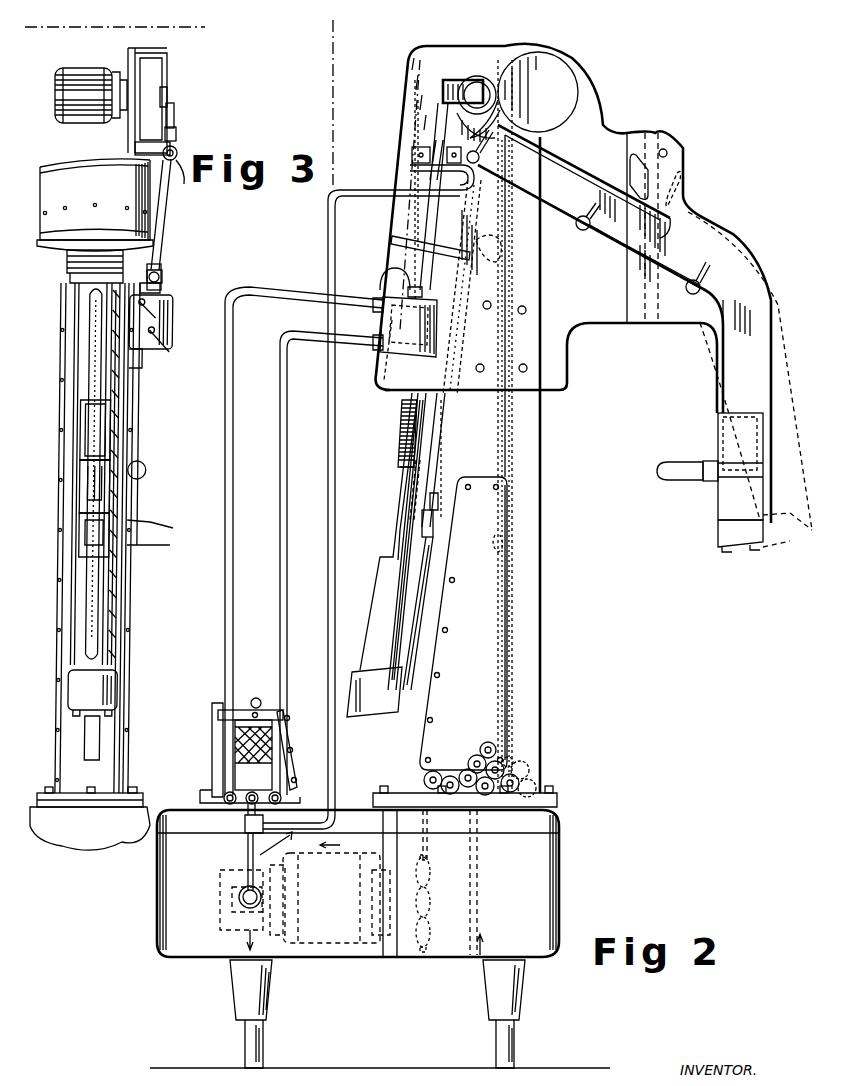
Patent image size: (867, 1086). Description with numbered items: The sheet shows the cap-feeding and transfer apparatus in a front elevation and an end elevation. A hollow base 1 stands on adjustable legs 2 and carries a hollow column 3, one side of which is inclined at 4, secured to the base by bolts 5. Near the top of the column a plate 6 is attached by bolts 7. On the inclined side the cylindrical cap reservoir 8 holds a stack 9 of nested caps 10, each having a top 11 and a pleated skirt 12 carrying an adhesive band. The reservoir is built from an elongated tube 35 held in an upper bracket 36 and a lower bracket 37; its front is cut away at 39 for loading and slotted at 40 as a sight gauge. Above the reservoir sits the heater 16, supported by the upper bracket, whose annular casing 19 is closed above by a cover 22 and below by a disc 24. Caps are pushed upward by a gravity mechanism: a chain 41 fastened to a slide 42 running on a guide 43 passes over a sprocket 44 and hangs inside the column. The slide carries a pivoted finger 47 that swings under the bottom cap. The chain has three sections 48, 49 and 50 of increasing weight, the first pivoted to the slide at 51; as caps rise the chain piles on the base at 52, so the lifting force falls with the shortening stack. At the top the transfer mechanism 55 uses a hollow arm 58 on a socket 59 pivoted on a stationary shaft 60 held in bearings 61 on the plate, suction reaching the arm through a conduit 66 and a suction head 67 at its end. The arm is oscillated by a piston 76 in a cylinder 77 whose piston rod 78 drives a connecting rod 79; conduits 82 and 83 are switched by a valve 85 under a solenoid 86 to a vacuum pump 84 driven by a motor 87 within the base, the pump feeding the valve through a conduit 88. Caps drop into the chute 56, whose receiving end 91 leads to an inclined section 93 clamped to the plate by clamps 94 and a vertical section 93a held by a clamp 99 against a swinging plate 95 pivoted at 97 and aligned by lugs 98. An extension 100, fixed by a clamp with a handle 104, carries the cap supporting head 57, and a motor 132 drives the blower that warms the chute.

In FIG. 3, the hollow base 1 is at (30, 20).
In FIG. 2, the hollow base 1 is at (556, 913).
In FIG. 2, the legs 2 is at (266, 1046).
In FIG. 3, the hollow column 3 is at (115, 752).
In FIG. 2, the hollow column 3 is at (333, 27).
In FIG. 2, the inclined side 4 is at (430, 618).
In FIG. 3, the bolts 5 is at (70, 790).
In FIG. 2, the bolts 5 is at (382, 792).
In FIG. 3, the plate 6 is at (130, 49).
In FIG. 2, the plate 6 is at (568, 368).
In FIG. 2, the bolts 7 is at (520, 350).
In FIG. 3, the cylindrical cap reservoir 8 is at (115, 656).
In FIG. 2, the cylindrical cap reservoir 8 is at (455, 60).
In FIG. 2, the stack of nested caps 9 is at (400, 425).
In FIG. 3, the caps 10 is at (86, 466).
In FIG. 2, the caps 10 is at (480, 66).
In FIG. 2, the cap top 11 is at (572, 30).
In FIG. 3, the annular pleated skirt 12 is at (143, 405).
In FIG. 3, the heater 16 is at (95, 200).
In FIG. 2, the heater 16 is at (499, 226).
In FIG. 3, the annular casing 19 is at (165, 232).
In FIG. 3, the cover 22 is at (54, 162).
In FIG. 3, the disc 24 is at (56, 257).
In FIG. 3, the elongated tube 35 is at (118, 622).
In FIG. 2, the elongated tube 35 is at (382, 620).
In FIG. 3, the upper bracket 36 is at (64, 284).
In FIG. 3, the lower bracket 37 is at (120, 695).
In FIG. 2, the lower bracket 37 is at (378, 712).
In FIG. 3, the cutaway section 39 is at (105, 446).
In FIG. 2, the cutaway section 39 is at (395, 525).
In FIG. 3, the sight slots 40 is at (68, 356).
In FIG. 3, the chain 41 is at (90, 378).
In FIG. 2, the chain 41 is at (447, 432).
In FIG. 3, the slide 42 is at (90, 545).
In FIG. 2, the slide 42 is at (438, 530).
In FIG. 3, the guide 43 is at (88, 742).
In FIG. 2, the guide 43 is at (410, 668).
In FIG. 2, the sprocket 44 is at (505, 252).
In FIG. 3, the pivoted finger 47 is at (90, 492).
In FIG. 2, the pivoted finger 47 is at (410, 498).
In FIG. 2, the chain section 48 is at (525, 440).
In FIG. 2, the chain section 49 is at (515, 673).
In FIG. 2, the chain section 50 is at (470, 760).
In FIG. 2, the pivotal connection 51 is at (438, 505).
In FIG. 2, the nested chain 52 is at (535, 765).
In FIG. 3, the transfer mechanism 55 is at (178, 148).
In FIG. 2, the transfer mechanism 55 is at (418, 150).
In FIG. 3, the cap chute 56 is at (168, 268).
In FIG. 2, the cap chute 56 is at (607, 163).
In FIG. 3, the cap supporting head 57 is at (160, 540).
In FIG. 2, the cap supporting head 57 is at (738, 548).
In FIG. 3, the hollow arm 58 is at (175, 112).
In FIG. 2, the hollow arm 58 is at (445, 98).
In FIG. 3, the socket 59 is at (178, 132).
In FIG. 2, the socket 59 is at (410, 172).
In FIG. 2, the stationary shaft 60 is at (412, 157).
In FIG. 2, the bearings 61 is at (431, 150).
In FIG. 3, the suction conduit 66 is at (185, 186).
In FIG. 2, the suction conduit 66 is at (328, 246).
In FIG. 3, the suction head 67 is at (167, 88).
In FIG. 2, the suction head 67 is at (447, 78).
In FIG. 2, the piston 76 is at (375, 393).
In FIG. 3, the cylinder 77 is at (168, 322).
In FIG. 2, the cylinder 77 is at (386, 290).
In FIG. 3, the piston rod 78 is at (160, 292).
In FIG. 2, the piston rod 78 is at (405, 268).
In FIG. 3, the connecting rod 79 is at (160, 250).
In FIG. 2, the connecting rod 79 is at (412, 232).
In FIG. 3, the conduit 82 is at (172, 302).
In FIG. 2, the conduit 82 is at (283, 505).
In FIG. 3, the conduit 83 is at (162, 362).
In FIG. 2, the conduit 83 is at (236, 488).
In FIG. 2, the vacuum pump 84 is at (225, 905).
In FIG. 2, the valve 85 is at (245, 774).
In FIG. 2, the solenoid 86 is at (255, 702).
In FIG. 2, the motor 87 is at (360, 925).
In FIG. 2, the conduit 88 is at (247, 842).
In FIG. 2, the receiving end of chute 91 is at (495, 118).
In FIG. 2, the inclined chute section 93 is at (612, 235).
In FIG. 2, the vertical chute section 93a is at (717, 392).
In FIG. 2, the clamps 94 is at (487, 212).
In FIG. 2, the swinging plate 95 is at (783, 312).
In FIG. 2, the pivot 97 is at (668, 152).
In FIG. 2, the lugs 98 is at (672, 204).
In FIG. 2, the clamp 99 is at (712, 298).
In FIG. 2, the extension 100 is at (728, 506).
In FIG. 3, the handle 104 is at (146, 474).
In FIG. 2, the handle 104 is at (670, 480).
In FIG. 3, the blower motor 132 is at (82, 67).